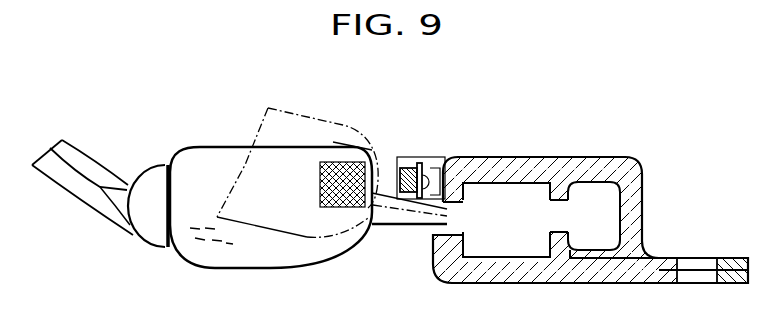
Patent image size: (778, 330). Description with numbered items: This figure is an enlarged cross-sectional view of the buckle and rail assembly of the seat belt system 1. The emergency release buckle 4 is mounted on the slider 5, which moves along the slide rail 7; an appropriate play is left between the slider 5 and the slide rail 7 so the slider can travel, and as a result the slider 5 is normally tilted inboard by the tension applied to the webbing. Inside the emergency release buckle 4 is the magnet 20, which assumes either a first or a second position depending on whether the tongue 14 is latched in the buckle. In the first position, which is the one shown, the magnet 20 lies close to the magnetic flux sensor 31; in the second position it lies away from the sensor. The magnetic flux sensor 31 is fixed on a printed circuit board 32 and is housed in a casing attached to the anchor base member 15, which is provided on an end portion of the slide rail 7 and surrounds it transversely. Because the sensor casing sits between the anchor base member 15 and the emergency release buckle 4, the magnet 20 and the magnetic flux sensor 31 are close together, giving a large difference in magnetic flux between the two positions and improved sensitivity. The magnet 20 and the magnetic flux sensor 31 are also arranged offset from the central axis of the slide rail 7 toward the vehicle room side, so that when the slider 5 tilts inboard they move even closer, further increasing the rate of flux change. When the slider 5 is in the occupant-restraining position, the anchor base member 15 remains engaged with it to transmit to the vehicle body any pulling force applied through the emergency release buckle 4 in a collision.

The cord 1 is at (71, 162).
The tongue 14 is at (150, 180).
The emergency release buckle 4 is at (204, 168).
The magnet 20 is at (340, 162).
The slider 5 is at (406, 218).
The magnetic flux sensor 31 is at (405, 166).
The printed circuit board 32 is at (421, 165).
The anchor base member 15 is at (490, 273).
The slide rail 7 is at (563, 257).